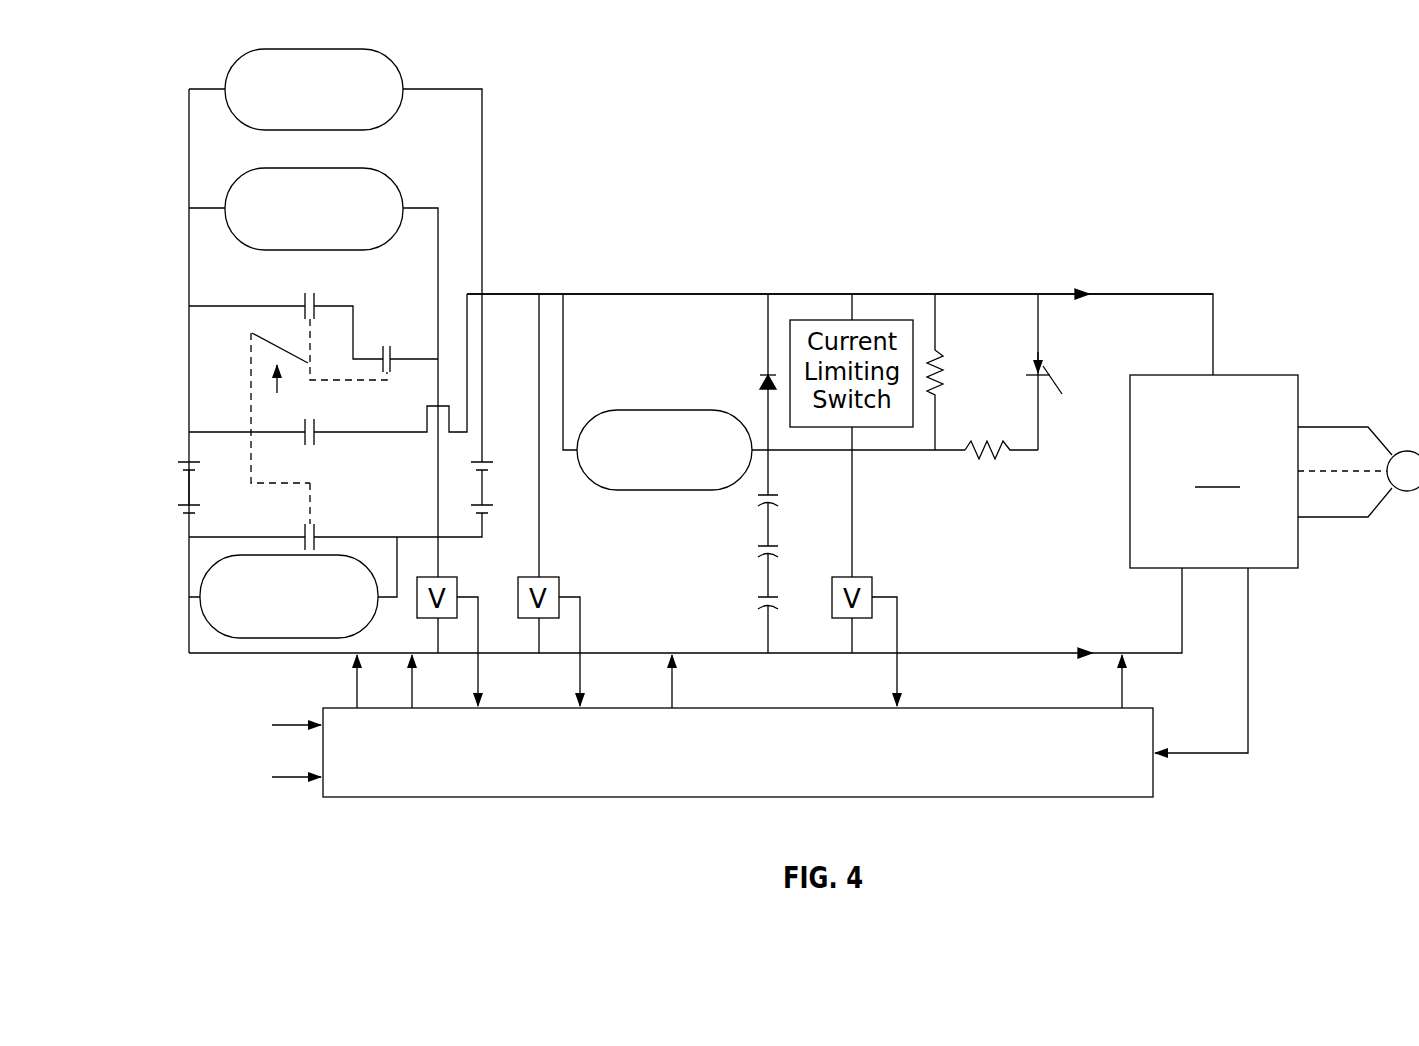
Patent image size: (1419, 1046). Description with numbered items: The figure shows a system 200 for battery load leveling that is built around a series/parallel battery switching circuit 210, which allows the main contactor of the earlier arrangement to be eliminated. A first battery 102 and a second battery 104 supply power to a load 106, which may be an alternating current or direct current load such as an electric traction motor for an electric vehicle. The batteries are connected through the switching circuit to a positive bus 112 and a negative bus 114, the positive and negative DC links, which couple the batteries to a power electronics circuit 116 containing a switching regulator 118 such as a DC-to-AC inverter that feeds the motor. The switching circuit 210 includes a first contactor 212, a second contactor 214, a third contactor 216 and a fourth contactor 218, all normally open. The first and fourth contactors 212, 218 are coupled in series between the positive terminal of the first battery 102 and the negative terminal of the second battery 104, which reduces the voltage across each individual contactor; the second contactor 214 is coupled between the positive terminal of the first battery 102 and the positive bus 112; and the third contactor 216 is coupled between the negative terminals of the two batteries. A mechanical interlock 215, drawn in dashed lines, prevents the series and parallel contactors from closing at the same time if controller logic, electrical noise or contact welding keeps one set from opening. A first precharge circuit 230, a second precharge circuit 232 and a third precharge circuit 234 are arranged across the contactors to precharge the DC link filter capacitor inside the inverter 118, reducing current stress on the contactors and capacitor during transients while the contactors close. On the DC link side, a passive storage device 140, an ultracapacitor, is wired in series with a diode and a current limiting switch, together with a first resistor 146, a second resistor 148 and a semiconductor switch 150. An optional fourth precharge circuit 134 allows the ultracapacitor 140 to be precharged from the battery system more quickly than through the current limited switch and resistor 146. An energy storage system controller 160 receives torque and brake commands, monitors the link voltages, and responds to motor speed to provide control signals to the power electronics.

The first battery 102 is at (175, 488).
The second battery 104 is at (492, 487).
The load 106 is at (1404, 491).
The positive bus 112 is at (728, 294).
The negative bus 114 is at (705, 653).
The power electronics circuit 116 is at (1217, 439).
The switching regulator 118 is at (1219, 472).
The fourth precharge circuit 134 is at (655, 410).
The passive storage device 140 is at (750, 530).
The first resistor 146 is at (945, 370).
The second resistor 148 is at (990, 458).
The semiconductor switch 150 is at (1045, 373).
The energy storage system controller 160 is at (1085, 797).
The system 200 is at (1126, 180).
The battery switching circuit 210 is at (509, 180).
The first contactor 212 is at (305, 295).
The second contactor 214 is at (316, 434).
The mechanical interlock 215 is at (251, 367).
The third contactor 216 is at (316, 534).
The fourth contactor 218 is at (386, 347).
The first precharge circuit 230 is at (335, 49).
The second precharge circuit 232 is at (335, 168).
The third precharge circuit 234 is at (200, 617).